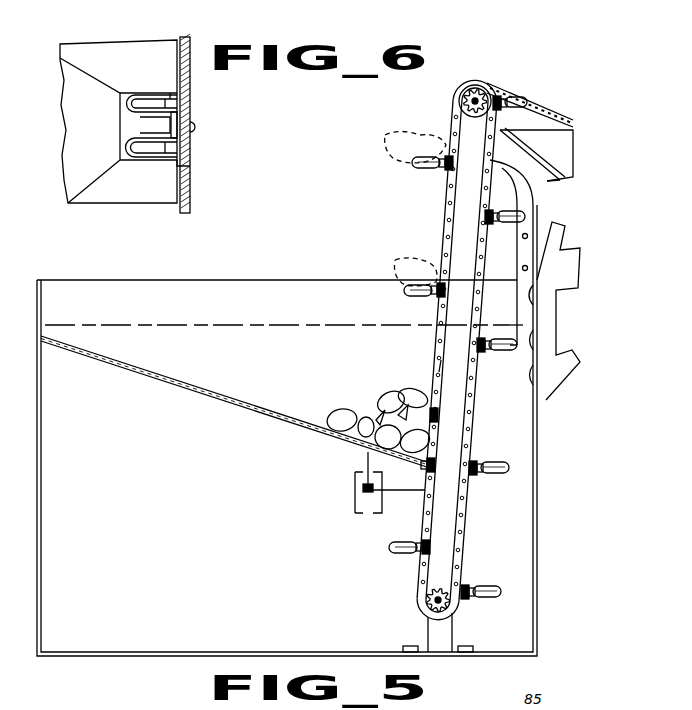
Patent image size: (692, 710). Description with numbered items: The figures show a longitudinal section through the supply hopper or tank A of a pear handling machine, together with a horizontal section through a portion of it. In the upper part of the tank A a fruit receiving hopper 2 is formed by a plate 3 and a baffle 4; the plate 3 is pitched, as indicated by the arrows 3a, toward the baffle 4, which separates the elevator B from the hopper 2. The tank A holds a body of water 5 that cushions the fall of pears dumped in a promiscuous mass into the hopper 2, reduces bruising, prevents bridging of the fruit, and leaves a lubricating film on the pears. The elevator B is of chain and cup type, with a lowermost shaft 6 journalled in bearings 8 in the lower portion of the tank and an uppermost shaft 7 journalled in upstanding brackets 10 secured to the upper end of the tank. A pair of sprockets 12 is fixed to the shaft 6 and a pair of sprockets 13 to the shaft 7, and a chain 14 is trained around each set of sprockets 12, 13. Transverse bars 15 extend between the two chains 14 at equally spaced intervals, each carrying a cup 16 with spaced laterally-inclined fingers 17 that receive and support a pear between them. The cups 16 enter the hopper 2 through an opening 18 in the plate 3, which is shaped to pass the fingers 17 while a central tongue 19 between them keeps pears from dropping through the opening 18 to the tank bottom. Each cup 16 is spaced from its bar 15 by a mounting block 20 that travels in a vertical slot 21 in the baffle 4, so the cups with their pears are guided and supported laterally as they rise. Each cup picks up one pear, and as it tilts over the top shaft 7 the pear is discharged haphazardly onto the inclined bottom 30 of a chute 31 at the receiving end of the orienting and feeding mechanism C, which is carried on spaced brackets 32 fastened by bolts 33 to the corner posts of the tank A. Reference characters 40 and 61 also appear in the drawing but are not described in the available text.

In FIG. 6, the fruit receiving hopper 2 is at (78, 147).
In FIG. 5, the fruit receiving hopper 2 is at (312, 359).
In FIG. 6, the plate 3 is at (80, 173).
In FIG. 5, the plate 3 is at (272, 412).
In FIG. 6, the arrows 3a is at (125, 70).
In FIG. 5, the arrows 3a is at (325, 370).
In FIG. 6, the baffle 4 is at (190, 198).
In FIG. 5, the baffle 4 is at (437, 350).
In FIG. 5, the body of water 5 is at (212, 325).
In FIG. 5, the lowermost shaft 6 is at (359, 414).
In FIG. 5, the uppermost shaft 7 is at (478, 94).
In FIG. 5, the bearings 8 is at (434, 627).
In FIG. 5, the upstanding brackets 10 is at (527, 203).
In FIG. 5, the sprockets 12 is at (431, 597).
In FIG. 5, the sprockets 13 is at (462, 102).
In FIG. 5, the chain 14 is at (478, 262).
In FIG. 6, the transverse bars 15 is at (188, 164).
In FIG. 5, the transverse bars 15 is at (497, 96).
In FIG. 6, the cup 16 is at (170, 110).
In FIG. 5, the cup 16 is at (506, 104).
In FIG. 6, the fingers 17 is at (130, 103).
In FIG. 5, the fingers 17 is at (522, 102).
In FIG. 6, the opening 18 is at (168, 96).
In FIG. 5, the opening 18 is at (424, 463).
In FIG. 6, the central tongue 19 is at (160, 132).
In FIG. 5, the central tongue 19 is at (420, 452).
In FIG. 6, the mounting block 20 is at (191, 130).
In FIG. 6, the vertical slot 21 is at (182, 118).
In FIG. 5, the vertical slot 21 is at (438, 366).
In FIG. 5, the inclined bottom 30 is at (556, 170).
In FIG. 5, the chute 31 is at (541, 142).
In FIG. 5, the brackets 32 is at (543, 297).
In FIG. 5, the bolts 33 is at (543, 338).
In FIG. 5, the sprocket housing 40 is at (478, 79).
In FIG. 5, the chute wall 61 is at (568, 136).
In FIG. 5, the supply hopper or tank A is at (247, 303).
In FIG. 5, the elevator B is at (440, 216).
In FIG. 5, the orienting and feeding mechanism C is at (592, 156).